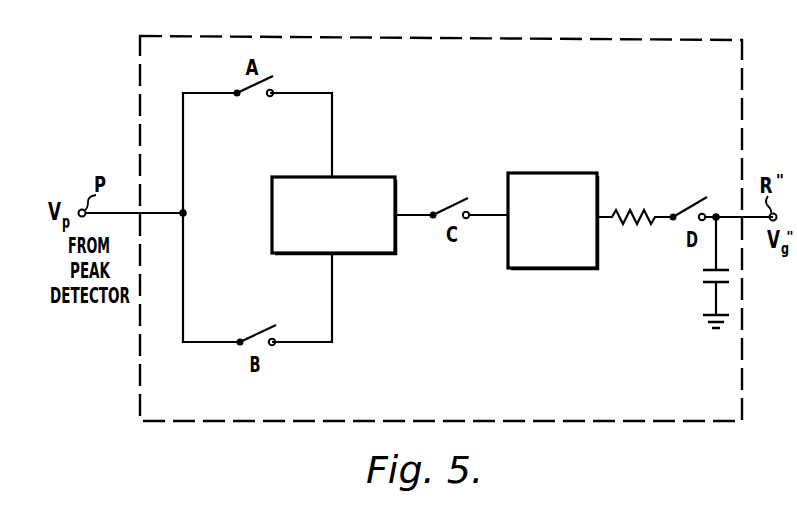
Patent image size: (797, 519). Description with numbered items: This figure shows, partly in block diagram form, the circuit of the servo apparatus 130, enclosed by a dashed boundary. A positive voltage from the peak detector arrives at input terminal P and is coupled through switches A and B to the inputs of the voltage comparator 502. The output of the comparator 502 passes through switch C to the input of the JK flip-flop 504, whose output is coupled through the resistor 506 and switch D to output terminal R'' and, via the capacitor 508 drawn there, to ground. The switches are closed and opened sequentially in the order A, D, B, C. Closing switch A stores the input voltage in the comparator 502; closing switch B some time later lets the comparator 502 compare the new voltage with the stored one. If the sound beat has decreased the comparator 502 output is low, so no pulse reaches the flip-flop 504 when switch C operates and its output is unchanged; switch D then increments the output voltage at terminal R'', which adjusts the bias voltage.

The servo apparatus 130 is at (139, 90).
The voltage comparator 502 is at (376, 255).
The JK flip-flop 504 is at (557, 270).
The resistor 506 is at (631, 222).
The capacitor 508 is at (706, 276).